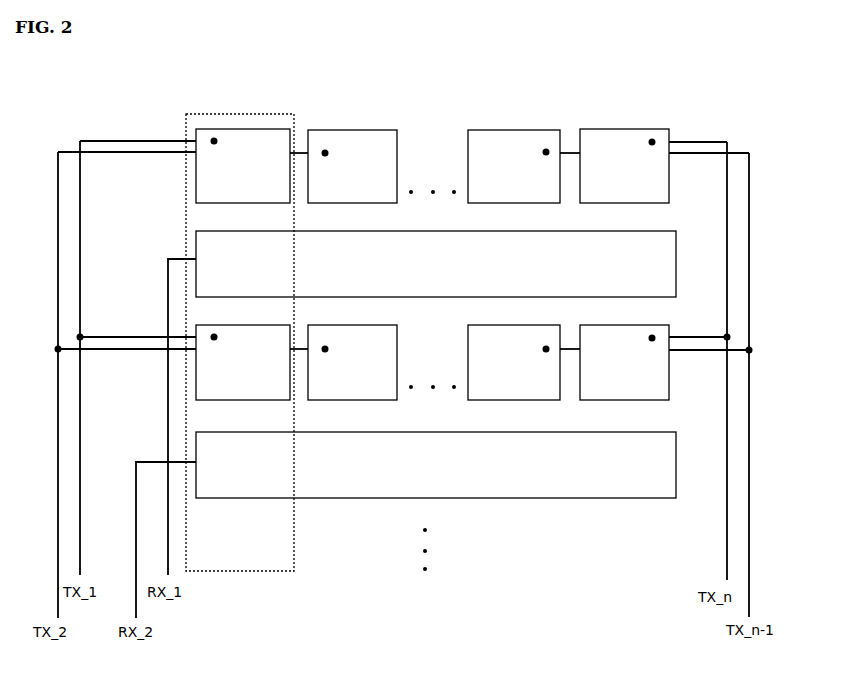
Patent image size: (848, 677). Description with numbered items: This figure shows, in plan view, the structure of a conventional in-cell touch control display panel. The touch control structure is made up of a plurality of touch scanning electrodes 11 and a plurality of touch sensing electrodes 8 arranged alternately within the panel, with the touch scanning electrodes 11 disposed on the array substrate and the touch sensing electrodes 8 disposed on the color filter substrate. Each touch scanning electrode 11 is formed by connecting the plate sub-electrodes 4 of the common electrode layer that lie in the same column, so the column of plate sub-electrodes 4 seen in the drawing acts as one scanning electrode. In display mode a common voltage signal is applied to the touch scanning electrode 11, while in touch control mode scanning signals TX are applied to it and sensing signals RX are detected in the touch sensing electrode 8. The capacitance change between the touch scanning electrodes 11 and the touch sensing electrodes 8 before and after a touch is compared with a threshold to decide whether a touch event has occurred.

The touch scanning electrode 11 is at (240, 105).
The plate sub-electrode 4 is at (276, 141).
The touch sensing electrode 8 is at (638, 259).